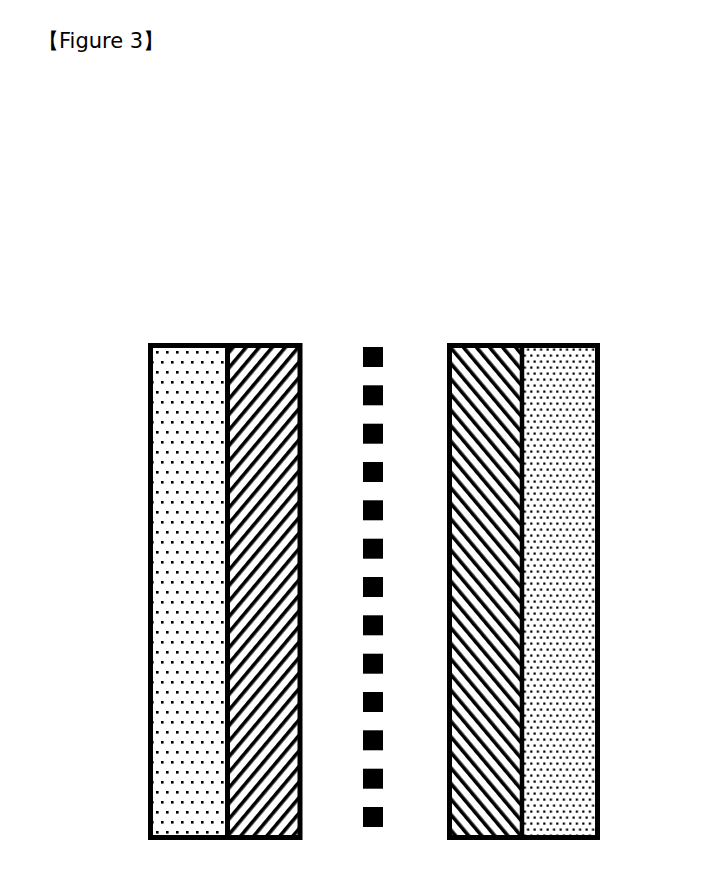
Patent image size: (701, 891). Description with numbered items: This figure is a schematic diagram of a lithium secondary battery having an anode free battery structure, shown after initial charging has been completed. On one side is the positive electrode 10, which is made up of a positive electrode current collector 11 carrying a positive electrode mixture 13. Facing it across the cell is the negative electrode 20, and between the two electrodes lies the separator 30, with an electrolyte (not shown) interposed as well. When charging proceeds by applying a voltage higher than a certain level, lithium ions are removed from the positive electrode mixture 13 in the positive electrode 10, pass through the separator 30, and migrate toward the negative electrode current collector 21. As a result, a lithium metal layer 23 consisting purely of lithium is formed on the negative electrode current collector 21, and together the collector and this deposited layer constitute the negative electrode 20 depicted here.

The positive electrode 10 is at (200, 171).
The positive electrode current collector 11 is at (192, 343).
The positive electrode mixture 13 is at (265, 343).
The negative electrode 20 is at (485, 171).
The negative electrode current collector 21 is at (562, 343).
The lithium metal layer 23 is at (489, 343).
The separator 30 is at (379, 346).